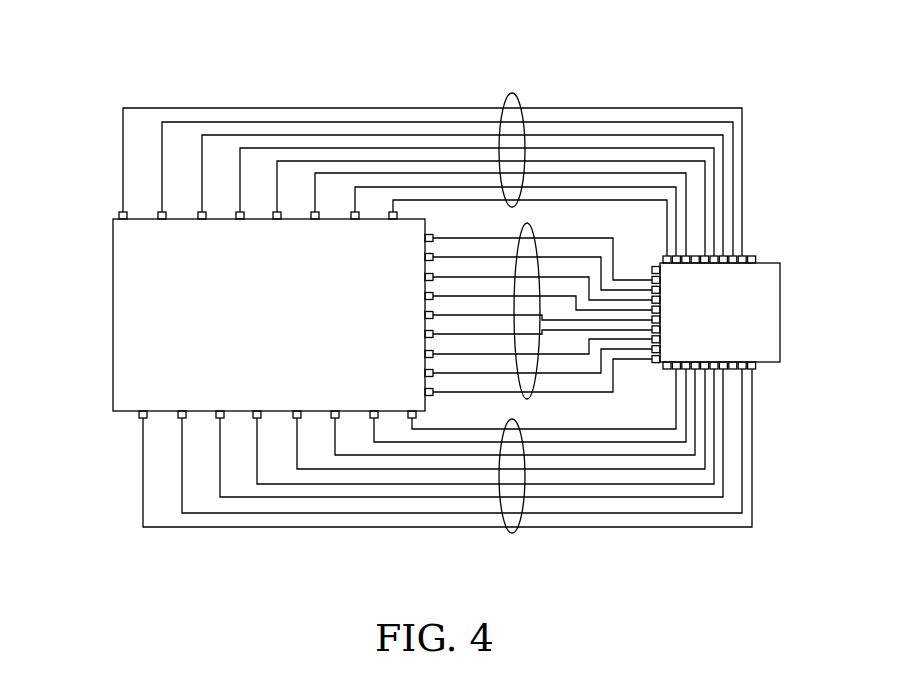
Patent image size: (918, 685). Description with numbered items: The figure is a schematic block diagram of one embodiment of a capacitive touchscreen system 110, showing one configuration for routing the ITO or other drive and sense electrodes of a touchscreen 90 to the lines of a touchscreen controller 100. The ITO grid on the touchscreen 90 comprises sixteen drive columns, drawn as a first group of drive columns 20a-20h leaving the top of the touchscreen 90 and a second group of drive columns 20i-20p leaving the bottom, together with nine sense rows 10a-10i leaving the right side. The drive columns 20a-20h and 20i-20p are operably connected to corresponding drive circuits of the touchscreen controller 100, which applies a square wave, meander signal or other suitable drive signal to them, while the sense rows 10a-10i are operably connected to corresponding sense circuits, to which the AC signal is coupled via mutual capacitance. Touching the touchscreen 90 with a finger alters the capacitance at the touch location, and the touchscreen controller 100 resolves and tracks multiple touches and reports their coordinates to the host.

The capacitive touchscreen system 110 is at (100, 86).
The touchscreen 90 is at (138, 298).
The touchscreen controller 100 is at (780, 312).
The drive columns 20a-20h is at (506, 93).
The drive columns 20i-20p is at (510, 533).
The sense rows 10a-10i is at (527, 224).